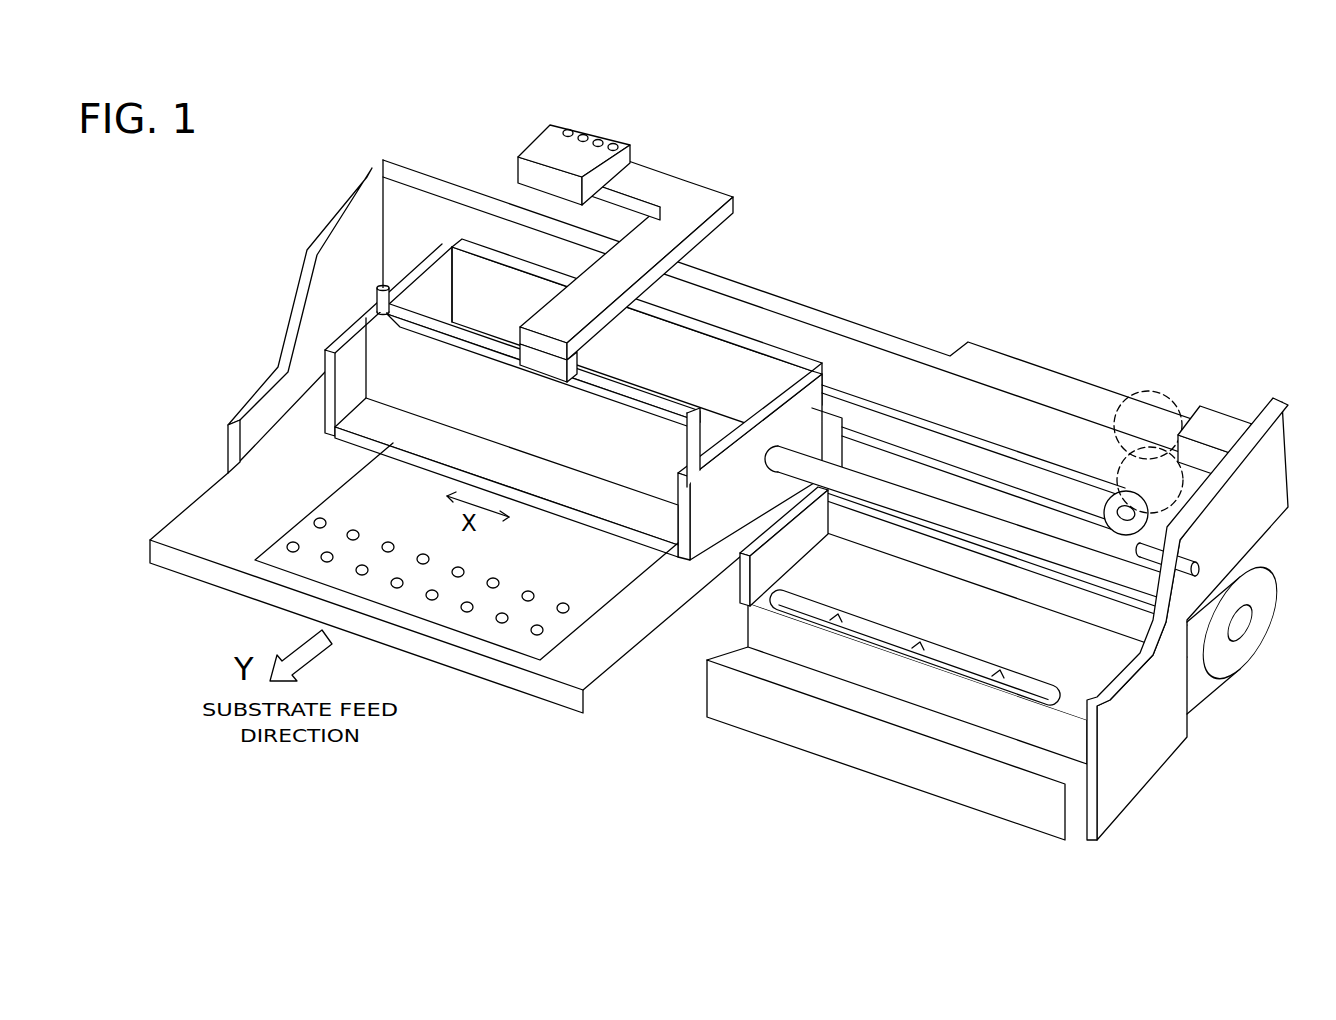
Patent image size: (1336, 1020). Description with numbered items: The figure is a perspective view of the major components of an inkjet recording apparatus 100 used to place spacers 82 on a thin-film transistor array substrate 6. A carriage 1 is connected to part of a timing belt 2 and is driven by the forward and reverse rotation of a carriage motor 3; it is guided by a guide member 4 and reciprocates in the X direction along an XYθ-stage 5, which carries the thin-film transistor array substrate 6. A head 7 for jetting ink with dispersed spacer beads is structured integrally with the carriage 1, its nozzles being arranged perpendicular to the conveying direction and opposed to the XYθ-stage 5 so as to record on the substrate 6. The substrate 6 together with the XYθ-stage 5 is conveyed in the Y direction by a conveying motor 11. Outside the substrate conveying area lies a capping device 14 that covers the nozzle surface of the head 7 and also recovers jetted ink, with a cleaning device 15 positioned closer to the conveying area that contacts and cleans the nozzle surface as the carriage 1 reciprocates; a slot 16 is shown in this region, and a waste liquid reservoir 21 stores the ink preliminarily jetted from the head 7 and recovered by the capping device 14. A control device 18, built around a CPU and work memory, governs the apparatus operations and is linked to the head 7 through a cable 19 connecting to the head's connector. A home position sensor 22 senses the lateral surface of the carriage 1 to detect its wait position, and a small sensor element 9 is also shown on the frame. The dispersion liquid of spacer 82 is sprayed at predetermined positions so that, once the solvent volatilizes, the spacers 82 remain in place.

The inkjet recording apparatus 100 is at (236, 268).
The carriage 1 is at (326, 356).
The timing belt 2 is at (1063, 468).
The carriage motor 3 is at (1160, 430).
The guide member 4 is at (973, 518).
The XYθ-stage 5 is at (298, 436).
The thin-film transistor array substrate 6 is at (302, 528).
The head 7 is at (428, 322).
The sensor 9 is at (376, 296).
The conveying motor 11 is at (1265, 630).
The capping device 14 is at (947, 678).
The cleaning device 15 is at (760, 576).
The slot 16 is at (800, 606).
The control device 18 is at (552, 150).
The cable 19 is at (683, 203).
The waste liquid reservoir 21 is at (858, 747).
The home position sensor 22 is at (1192, 560).
The spacer 82 is at (537, 636).